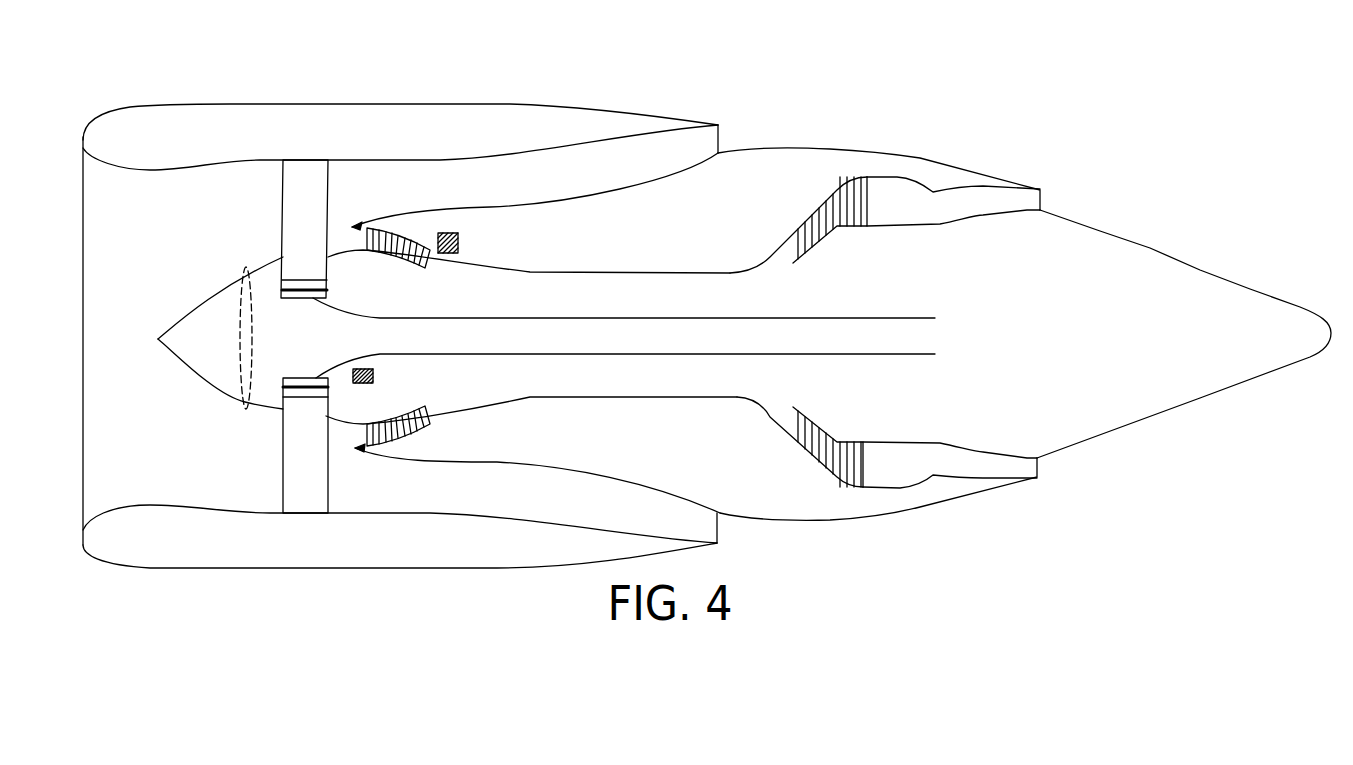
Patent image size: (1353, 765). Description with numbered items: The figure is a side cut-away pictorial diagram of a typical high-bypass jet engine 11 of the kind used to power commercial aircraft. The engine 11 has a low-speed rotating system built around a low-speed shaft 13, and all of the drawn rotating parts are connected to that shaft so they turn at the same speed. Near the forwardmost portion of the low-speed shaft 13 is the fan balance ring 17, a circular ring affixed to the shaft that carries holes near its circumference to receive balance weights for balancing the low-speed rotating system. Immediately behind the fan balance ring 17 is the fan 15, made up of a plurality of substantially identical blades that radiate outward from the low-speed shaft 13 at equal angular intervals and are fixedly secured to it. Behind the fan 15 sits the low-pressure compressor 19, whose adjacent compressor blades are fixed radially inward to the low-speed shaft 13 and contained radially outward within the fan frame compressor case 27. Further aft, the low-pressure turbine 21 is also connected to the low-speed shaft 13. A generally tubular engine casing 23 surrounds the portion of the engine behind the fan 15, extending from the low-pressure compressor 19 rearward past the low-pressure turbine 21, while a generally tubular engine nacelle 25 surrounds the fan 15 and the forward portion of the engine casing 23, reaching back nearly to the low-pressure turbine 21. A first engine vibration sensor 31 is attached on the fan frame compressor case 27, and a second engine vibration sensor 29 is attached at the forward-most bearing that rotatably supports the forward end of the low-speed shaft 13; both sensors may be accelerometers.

The high-bypass jet engine 11 is at (860, 75).
The low-speed shaft 13 is at (523, 355).
The fan 15 is at (270, 207).
The fan balance ring 17 is at (240, 268).
The low-pressure compressor 19 is at (387, 261).
The low-pressure turbine 21 is at (789, 258).
The engine casing 23 is at (633, 213).
The engine nacelle 25 is at (413, 115).
The fan frame compressor case 27 is at (398, 230).
The second engine vibration sensor 29 is at (374, 376).
The first engine vibration sensor 31 is at (445, 233).